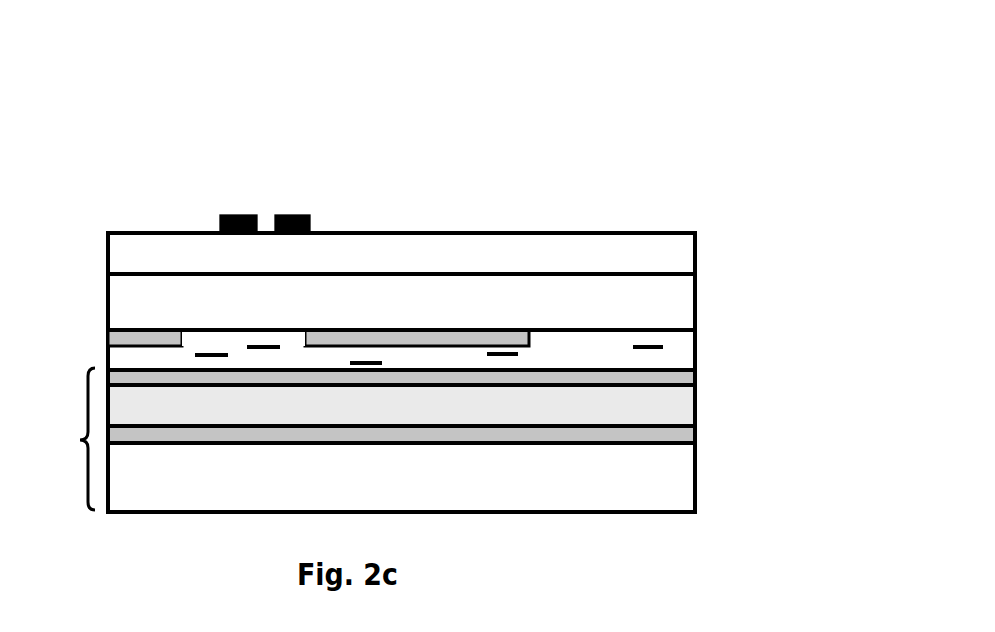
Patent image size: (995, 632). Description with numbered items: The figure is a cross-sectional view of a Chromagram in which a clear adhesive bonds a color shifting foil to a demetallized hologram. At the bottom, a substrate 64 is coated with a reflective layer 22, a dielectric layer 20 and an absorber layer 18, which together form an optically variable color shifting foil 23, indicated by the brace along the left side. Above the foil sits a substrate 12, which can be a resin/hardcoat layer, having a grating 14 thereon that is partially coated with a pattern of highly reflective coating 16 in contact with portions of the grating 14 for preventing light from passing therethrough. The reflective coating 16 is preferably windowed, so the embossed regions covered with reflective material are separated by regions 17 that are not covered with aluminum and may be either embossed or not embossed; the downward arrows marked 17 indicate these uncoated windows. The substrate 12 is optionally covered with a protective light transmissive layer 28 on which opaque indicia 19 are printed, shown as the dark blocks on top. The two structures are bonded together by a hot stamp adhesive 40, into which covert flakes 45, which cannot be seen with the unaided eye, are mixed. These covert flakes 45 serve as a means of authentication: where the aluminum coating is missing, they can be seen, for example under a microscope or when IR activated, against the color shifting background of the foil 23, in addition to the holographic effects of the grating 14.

The substrate 12 is at (401, 302).
The grating 14 is at (197, 328).
The highly reflective coating 16 is at (108, 335).
The regions not covered with aluminum 17 is at (248, 168).
The absorber layer 18 is at (683, 376).
The opaque indicia 19 is at (295, 213).
The dielectric layer 20 is at (683, 412).
The reflective layer 22 is at (690, 437).
The optically variable color shifting foil 23 is at (68, 439).
The protective light transmissive layer 28 is at (673, 255).
The hot stamp adhesive 40 is at (693, 355).
The covert flakes 45 is at (663, 347).
The substrate 64 is at (401, 477).